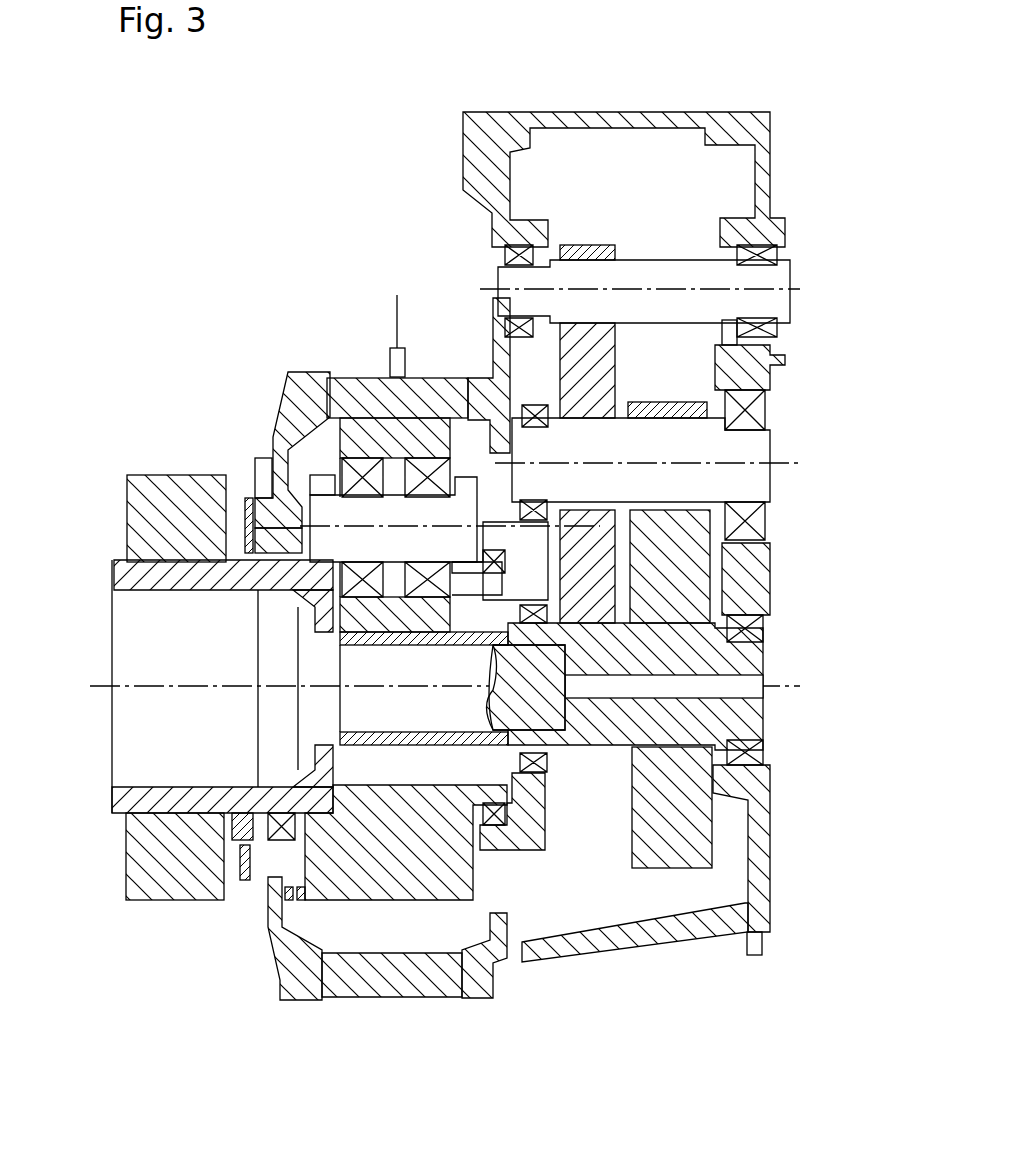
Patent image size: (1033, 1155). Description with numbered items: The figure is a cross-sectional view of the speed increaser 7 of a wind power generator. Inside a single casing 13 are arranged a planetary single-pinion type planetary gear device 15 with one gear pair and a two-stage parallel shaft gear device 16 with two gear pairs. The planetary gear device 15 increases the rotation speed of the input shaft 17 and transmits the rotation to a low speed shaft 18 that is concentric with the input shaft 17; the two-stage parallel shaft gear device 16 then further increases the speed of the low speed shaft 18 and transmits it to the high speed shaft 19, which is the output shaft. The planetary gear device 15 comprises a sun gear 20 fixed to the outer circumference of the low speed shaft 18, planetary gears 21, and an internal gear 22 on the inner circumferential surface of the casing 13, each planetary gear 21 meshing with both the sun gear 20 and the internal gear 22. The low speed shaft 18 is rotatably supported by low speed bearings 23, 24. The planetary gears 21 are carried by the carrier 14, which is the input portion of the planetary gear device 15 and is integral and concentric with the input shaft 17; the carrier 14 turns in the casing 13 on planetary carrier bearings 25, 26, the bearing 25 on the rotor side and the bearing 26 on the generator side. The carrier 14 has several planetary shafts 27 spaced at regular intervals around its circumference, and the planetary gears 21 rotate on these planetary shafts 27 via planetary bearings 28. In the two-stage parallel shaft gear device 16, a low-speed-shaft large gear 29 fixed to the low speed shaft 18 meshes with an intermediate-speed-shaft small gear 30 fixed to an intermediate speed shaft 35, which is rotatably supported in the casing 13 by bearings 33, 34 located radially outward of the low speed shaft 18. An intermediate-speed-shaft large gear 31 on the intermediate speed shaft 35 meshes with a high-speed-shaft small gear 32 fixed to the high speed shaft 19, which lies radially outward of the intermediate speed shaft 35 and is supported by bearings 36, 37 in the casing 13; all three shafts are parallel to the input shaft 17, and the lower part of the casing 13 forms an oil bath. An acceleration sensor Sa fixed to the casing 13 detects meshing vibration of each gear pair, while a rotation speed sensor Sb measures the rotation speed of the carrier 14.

The speed increaser 7 is at (567, 1008).
The casing 13 is at (283, 430).
The carrier 14 is at (312, 805).
The planetary gear device 15 is at (320, 652).
The two-stage parallel shaft gear device 16 is at (580, 185).
The input shaft 17 is at (130, 575).
The low speed shaft 18 is at (745, 660).
The high speed shaft 19 is at (725, 268).
The sun gear 20 is at (393, 748).
The planetary gears 21 is at (350, 437).
The internal gear 22 is at (370, 405).
The low speed bearing 23 is at (547, 762).
The low speed bearing 24 is at (765, 746).
The planetary carrier bearing 25 is at (262, 590).
The planetary carrier bearing 26 is at (494, 826).
The planetary shafts 27 is at (429, 537).
The planetary bearings 28 is at (425, 470).
The low-speed-shaft large gear 29 is at (692, 828).
The intermediate-speed-shaft small gear 30 is at (692, 578).
The intermediate-speed-shaft large gear 31 is at (612, 378).
The high-speed-shaft small gear 32 is at (605, 245).
The bearing 33 is at (530, 410).
The bearing 34 is at (762, 402).
The intermediate speed shaft 35 is at (762, 474).
The bearing 36 is at (505, 253).
The bearing 37 is at (770, 330).
The acceleration sensor Sa is at (263, 472).
The rotation speed sensor Sb is at (300, 892).